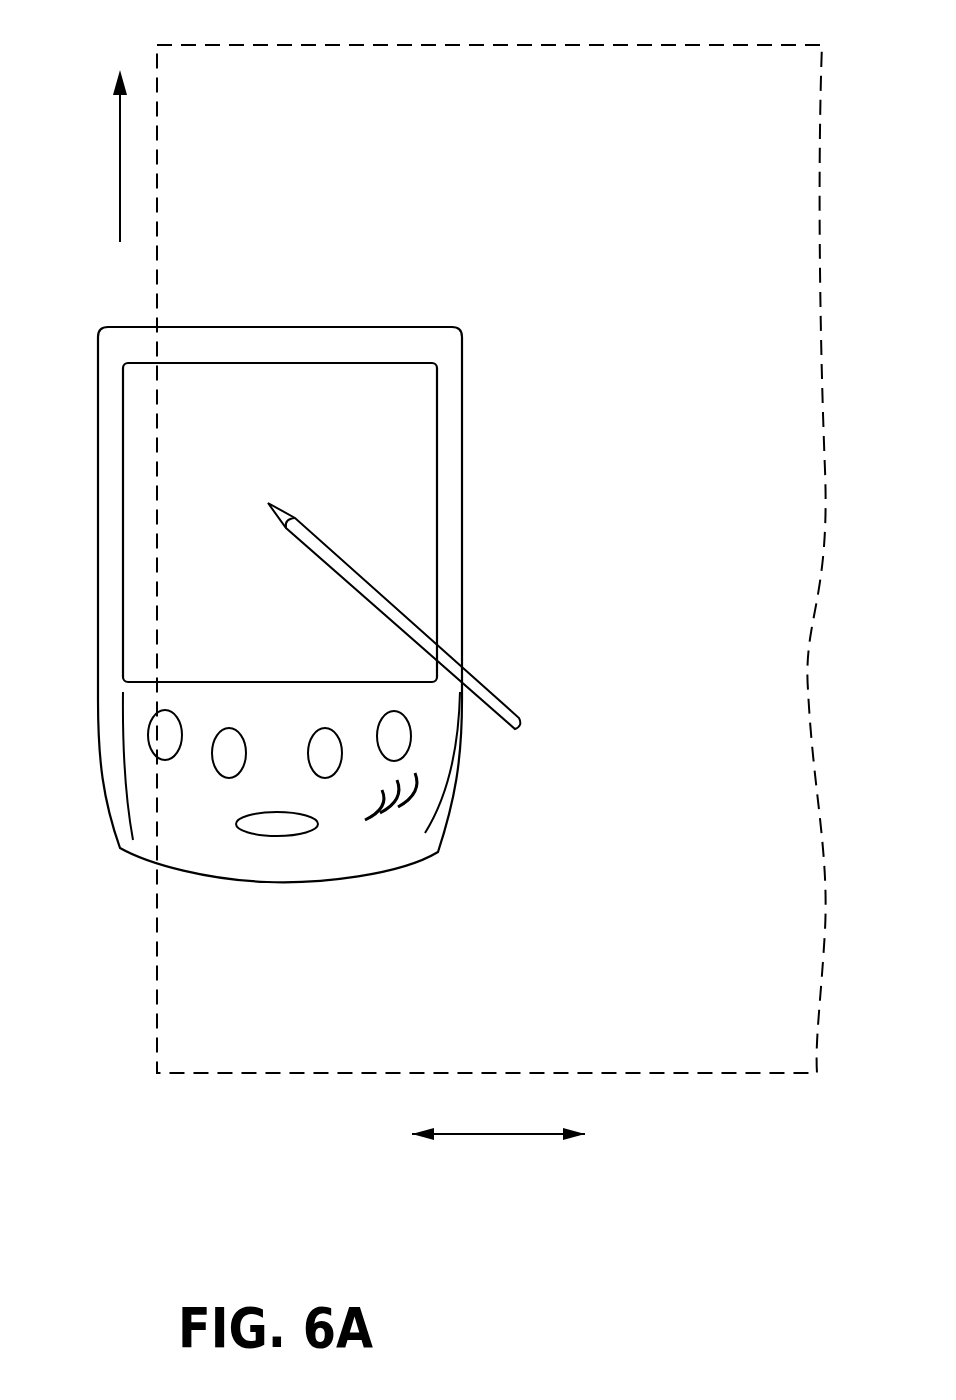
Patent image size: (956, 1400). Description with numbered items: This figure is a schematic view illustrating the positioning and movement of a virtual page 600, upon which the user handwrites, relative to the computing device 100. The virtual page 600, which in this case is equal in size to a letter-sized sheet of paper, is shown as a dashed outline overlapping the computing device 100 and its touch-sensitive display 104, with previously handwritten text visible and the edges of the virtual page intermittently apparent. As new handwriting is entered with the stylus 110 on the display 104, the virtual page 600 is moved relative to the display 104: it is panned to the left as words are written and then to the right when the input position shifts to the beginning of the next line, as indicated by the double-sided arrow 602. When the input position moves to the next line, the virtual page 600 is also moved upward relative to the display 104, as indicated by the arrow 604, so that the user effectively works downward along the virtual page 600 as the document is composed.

The virtual page 600 is at (605, 67).
The double-sided arrow 602 is at (498, 1135).
The arrow 604 is at (118, 187).
The computing device 100 is at (107, 710).
The touch-sensitive display 104 is at (418, 556).
The stylus 110 is at (490, 703).